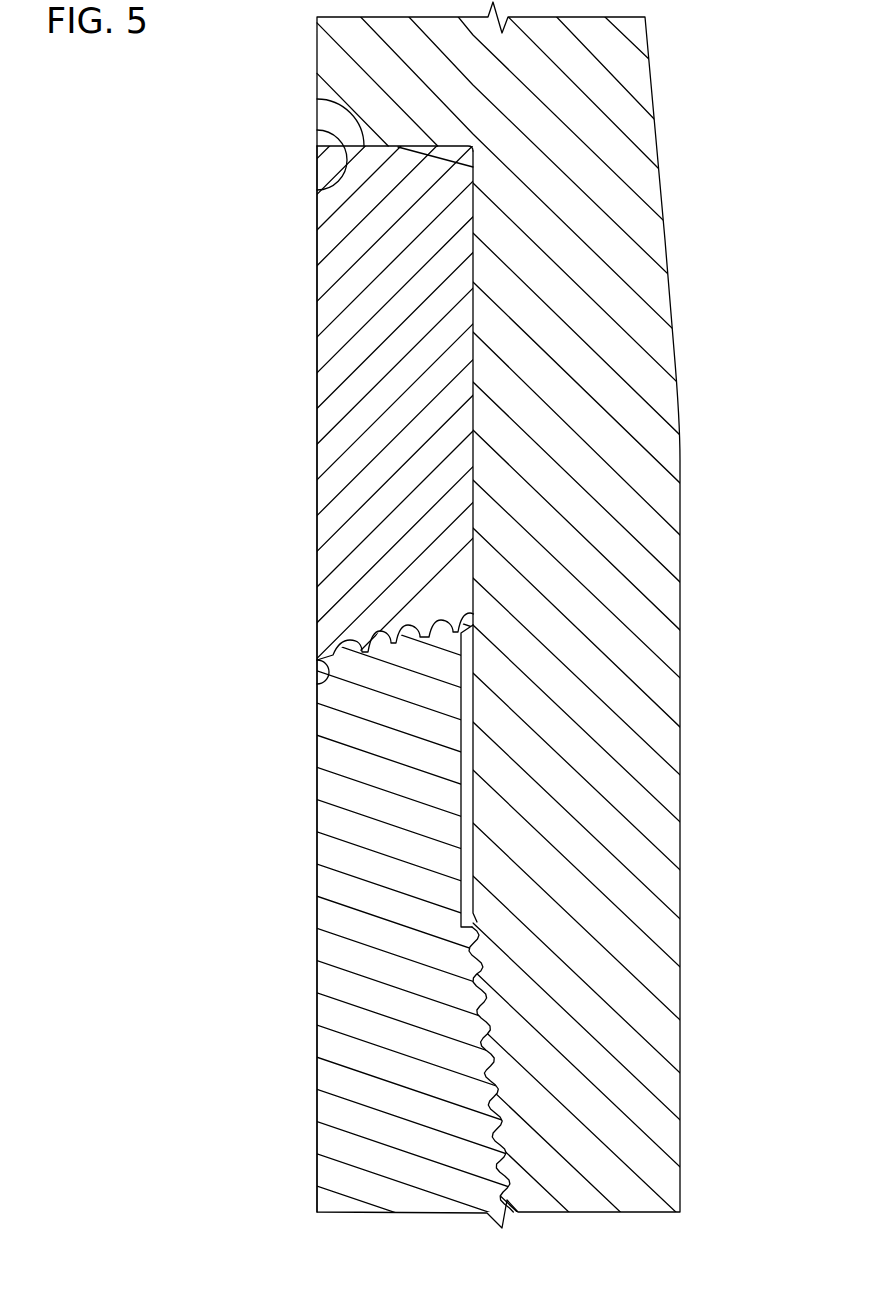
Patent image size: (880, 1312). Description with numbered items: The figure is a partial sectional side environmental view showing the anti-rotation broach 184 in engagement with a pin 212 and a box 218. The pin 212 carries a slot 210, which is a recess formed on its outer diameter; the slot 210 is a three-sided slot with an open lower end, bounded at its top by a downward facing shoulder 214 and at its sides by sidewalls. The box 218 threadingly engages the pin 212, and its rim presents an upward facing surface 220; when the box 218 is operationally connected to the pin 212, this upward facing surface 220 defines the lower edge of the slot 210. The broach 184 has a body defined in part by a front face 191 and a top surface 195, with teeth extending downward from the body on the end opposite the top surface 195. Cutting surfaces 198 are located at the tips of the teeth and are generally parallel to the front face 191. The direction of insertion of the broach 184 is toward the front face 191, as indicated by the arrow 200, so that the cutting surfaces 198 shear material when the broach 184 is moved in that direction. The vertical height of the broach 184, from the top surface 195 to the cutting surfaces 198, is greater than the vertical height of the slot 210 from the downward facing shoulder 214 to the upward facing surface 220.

The front face 191 is at (480, 272).
The pin 212 is at (330, 62).
The top surface 195 is at (317, 103).
The broach 184 is at (276, 396).
The arrow 200 is at (238, 311).
The slot 210 is at (468, 242).
The downward facing shoulder 214 is at (317, 191).
The upward facing surface 220 is at (368, 656).
The cutting surfaces 198 is at (317, 684).
The box 218 is at (330, 851).